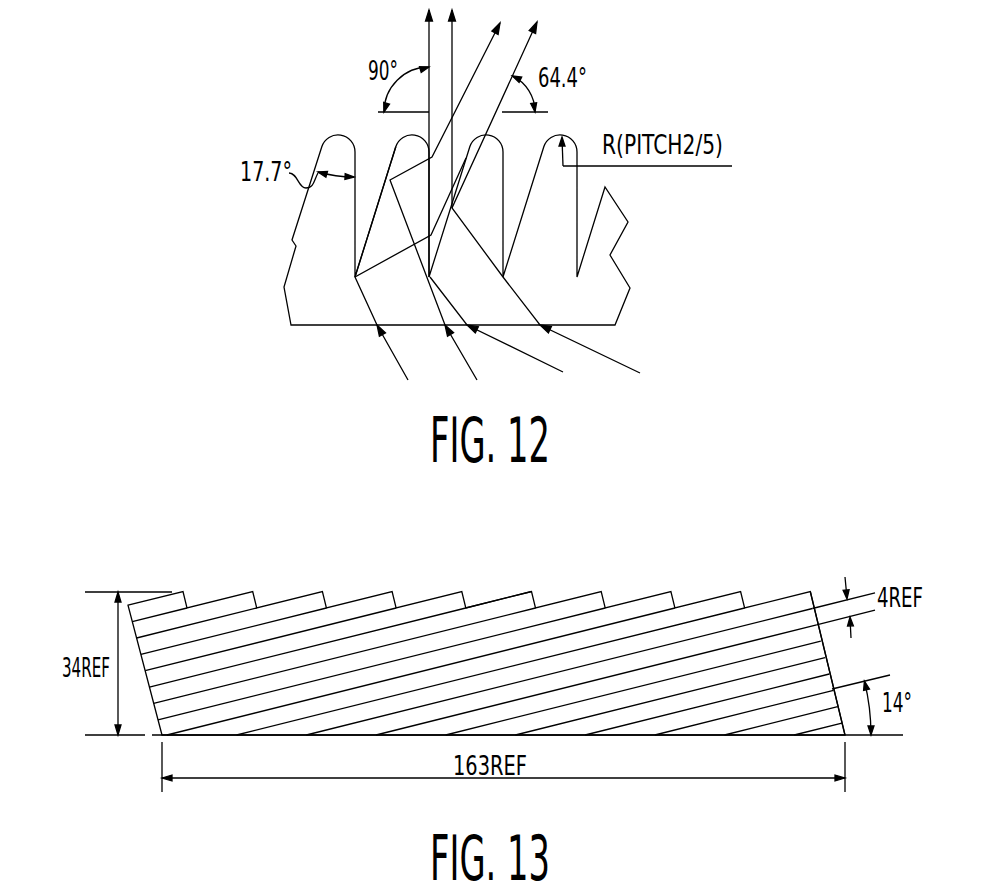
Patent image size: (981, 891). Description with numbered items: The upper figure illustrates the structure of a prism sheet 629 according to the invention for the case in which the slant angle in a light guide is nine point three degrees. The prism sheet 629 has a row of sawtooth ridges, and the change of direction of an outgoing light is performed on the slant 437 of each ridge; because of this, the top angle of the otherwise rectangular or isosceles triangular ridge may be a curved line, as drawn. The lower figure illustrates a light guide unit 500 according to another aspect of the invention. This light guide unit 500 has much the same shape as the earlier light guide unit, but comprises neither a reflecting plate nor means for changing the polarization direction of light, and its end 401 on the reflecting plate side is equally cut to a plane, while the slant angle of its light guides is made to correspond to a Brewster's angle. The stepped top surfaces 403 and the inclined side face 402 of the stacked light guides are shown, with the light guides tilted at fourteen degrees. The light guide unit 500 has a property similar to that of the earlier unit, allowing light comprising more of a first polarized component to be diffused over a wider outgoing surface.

In FIG. 12, the prism sheet with sawtooth ridges 629 is at (668, 61).
In FIG. 12, the slant 437 is at (385, 181).
In FIG. 13, the light guide unit 500 is at (698, 560).
In FIG. 13, the top step surface 403 is at (514, 595).
In FIG. 13, the inclined side face 402 is at (830, 667).
In FIG. 13, the end of the reflecting plate side 401 is at (574, 736).